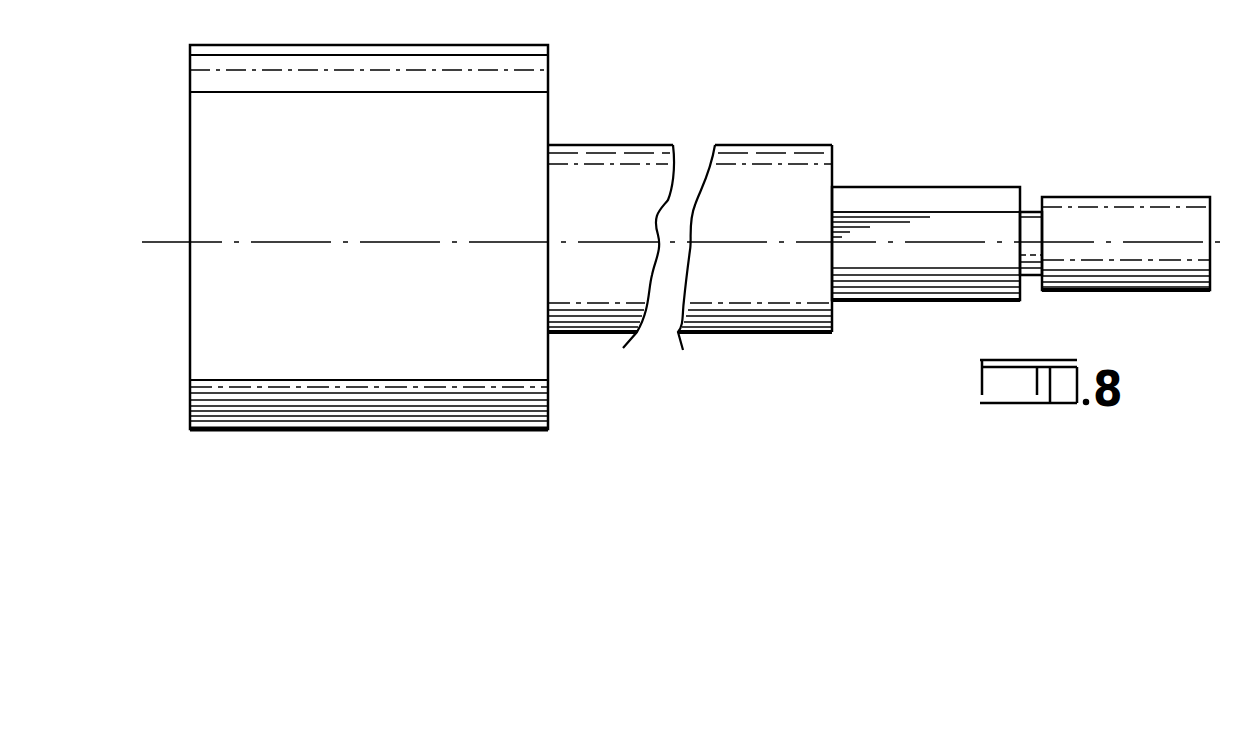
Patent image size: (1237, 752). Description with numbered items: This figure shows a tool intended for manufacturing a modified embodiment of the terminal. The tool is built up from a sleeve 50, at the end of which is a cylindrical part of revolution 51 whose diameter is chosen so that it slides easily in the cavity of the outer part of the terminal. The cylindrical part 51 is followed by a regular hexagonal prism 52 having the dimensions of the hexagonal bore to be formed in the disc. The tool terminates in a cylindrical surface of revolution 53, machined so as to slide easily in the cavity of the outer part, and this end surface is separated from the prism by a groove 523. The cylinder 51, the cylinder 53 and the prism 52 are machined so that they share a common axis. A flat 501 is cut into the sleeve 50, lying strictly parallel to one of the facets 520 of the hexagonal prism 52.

The sleeve 50 is at (520, 393).
The flat 501 is at (528, 118).
The cylindrical part of revolution 51 is at (622, 334).
The regular hexagonal prism 52 is at (897, 283).
The facet of the hexagonal prism 520 is at (935, 228).
The groove 523 is at (1028, 278).
The cylindrical surface of revolution 53 is at (1145, 290).